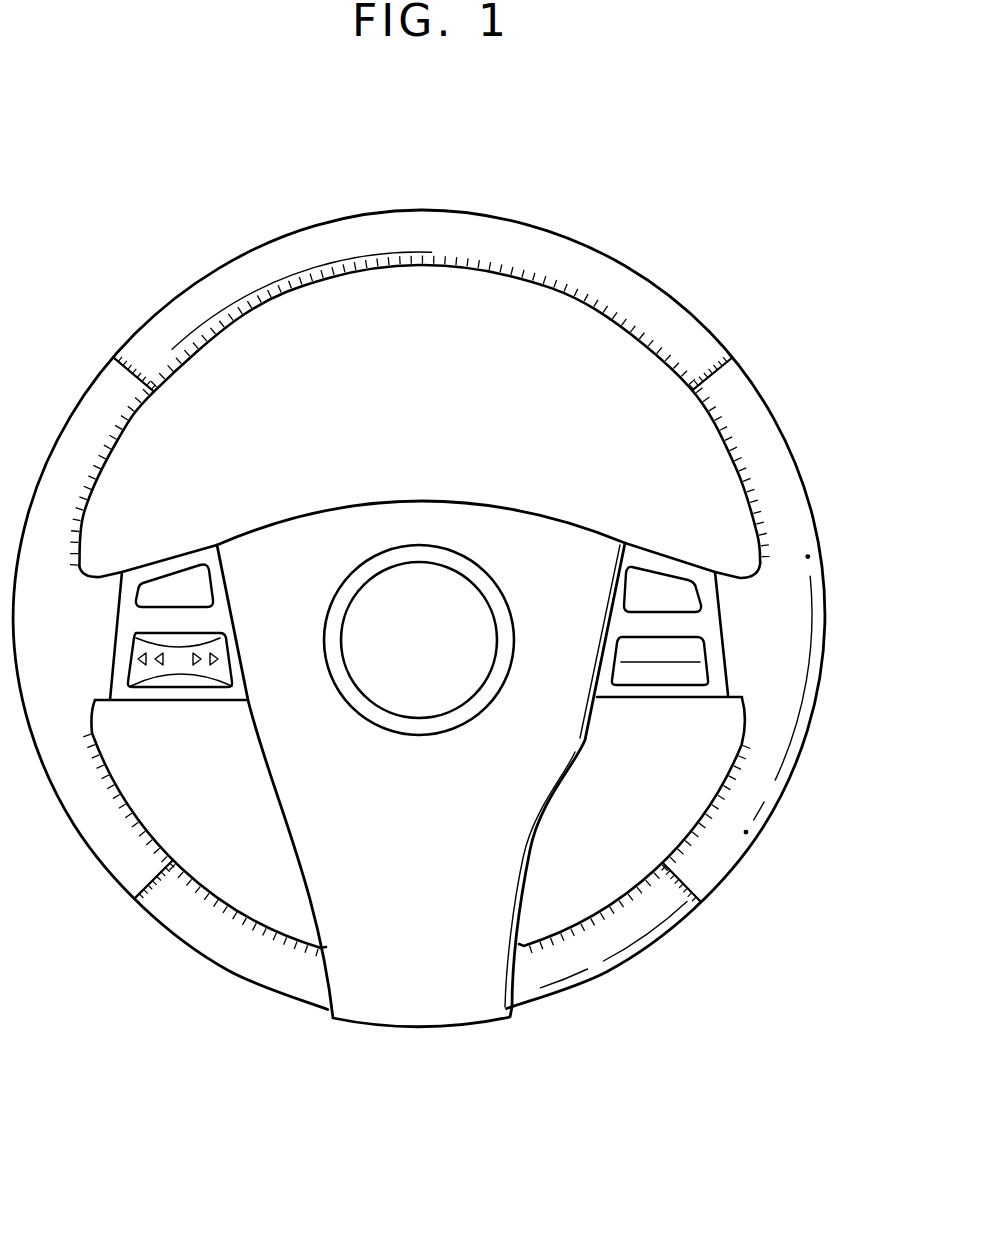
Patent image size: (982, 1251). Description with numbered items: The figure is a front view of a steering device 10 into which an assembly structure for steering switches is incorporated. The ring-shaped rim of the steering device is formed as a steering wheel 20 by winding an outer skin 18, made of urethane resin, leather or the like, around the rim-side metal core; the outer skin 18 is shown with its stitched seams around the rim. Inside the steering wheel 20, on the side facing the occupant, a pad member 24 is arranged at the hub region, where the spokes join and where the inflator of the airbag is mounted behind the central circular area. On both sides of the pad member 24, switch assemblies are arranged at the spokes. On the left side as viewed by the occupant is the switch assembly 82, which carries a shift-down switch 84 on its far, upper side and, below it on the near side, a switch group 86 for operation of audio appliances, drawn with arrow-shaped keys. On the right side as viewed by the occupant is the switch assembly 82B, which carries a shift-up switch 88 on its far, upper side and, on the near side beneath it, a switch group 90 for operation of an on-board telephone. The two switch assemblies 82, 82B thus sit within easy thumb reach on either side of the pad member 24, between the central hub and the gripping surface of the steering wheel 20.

The steering device 10 is at (601, 204).
The steering wheel 20 is at (790, 397).
The outer skin 18 is at (778, 458).
The pad member 24 is at (426, 489).
The switch assembly 82 is at (171, 602).
The shift-down switch 84 is at (168, 585).
The switch group for operation of audio appliances 86 is at (188, 708).
The switch assembly 82B is at (669, 604).
The shift-up switch 88 is at (662, 588).
The switch group for operation of an on-board telephone 90 is at (657, 707).